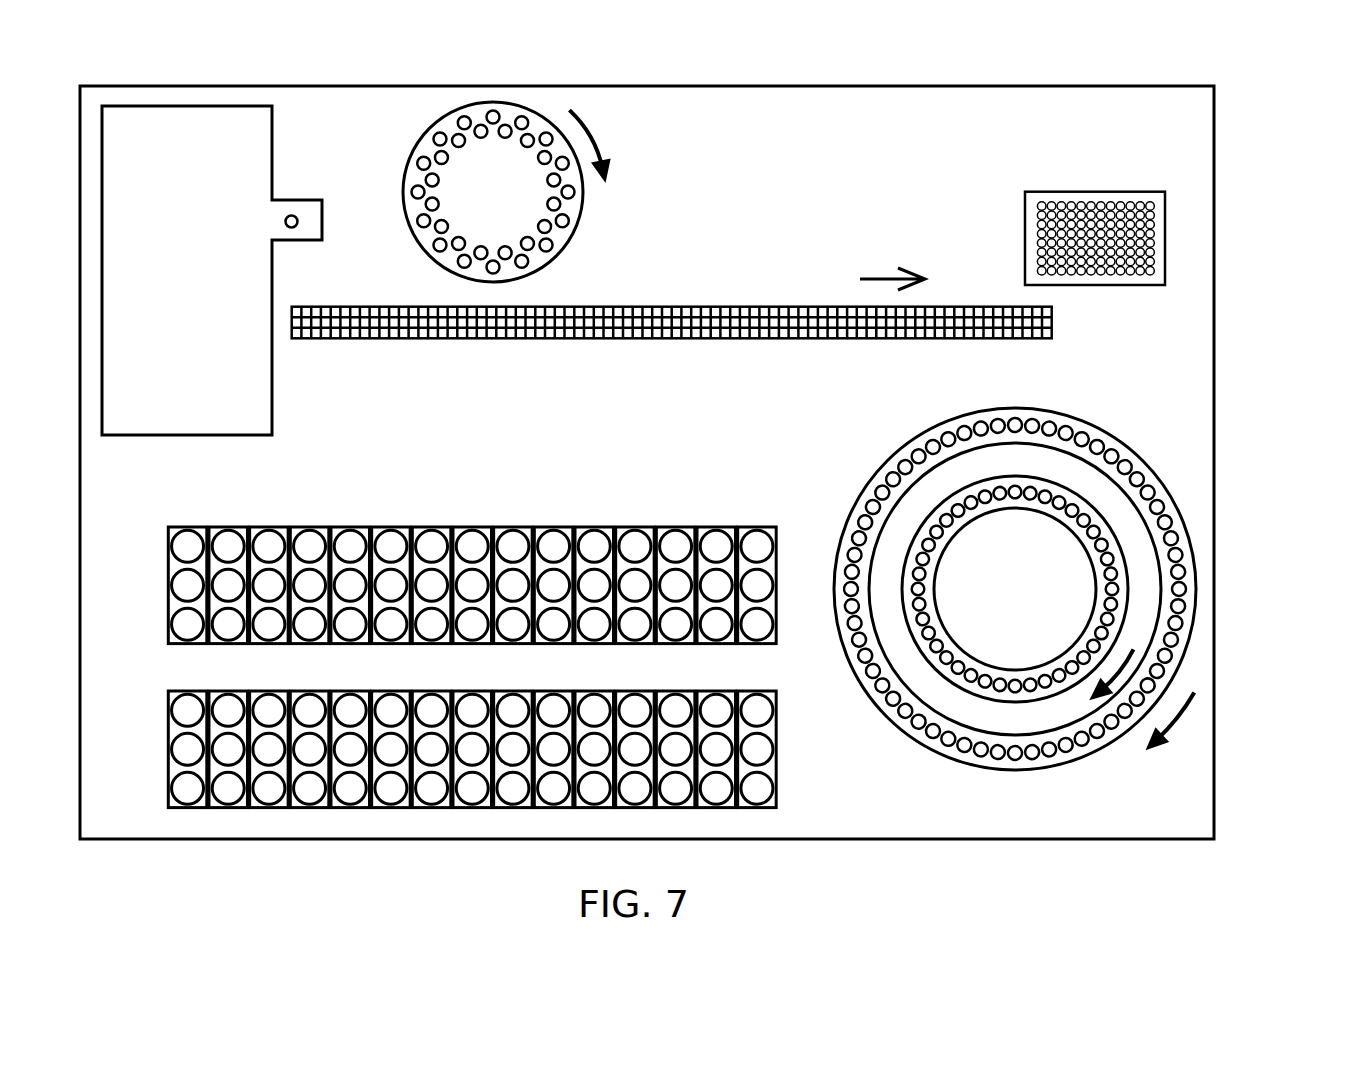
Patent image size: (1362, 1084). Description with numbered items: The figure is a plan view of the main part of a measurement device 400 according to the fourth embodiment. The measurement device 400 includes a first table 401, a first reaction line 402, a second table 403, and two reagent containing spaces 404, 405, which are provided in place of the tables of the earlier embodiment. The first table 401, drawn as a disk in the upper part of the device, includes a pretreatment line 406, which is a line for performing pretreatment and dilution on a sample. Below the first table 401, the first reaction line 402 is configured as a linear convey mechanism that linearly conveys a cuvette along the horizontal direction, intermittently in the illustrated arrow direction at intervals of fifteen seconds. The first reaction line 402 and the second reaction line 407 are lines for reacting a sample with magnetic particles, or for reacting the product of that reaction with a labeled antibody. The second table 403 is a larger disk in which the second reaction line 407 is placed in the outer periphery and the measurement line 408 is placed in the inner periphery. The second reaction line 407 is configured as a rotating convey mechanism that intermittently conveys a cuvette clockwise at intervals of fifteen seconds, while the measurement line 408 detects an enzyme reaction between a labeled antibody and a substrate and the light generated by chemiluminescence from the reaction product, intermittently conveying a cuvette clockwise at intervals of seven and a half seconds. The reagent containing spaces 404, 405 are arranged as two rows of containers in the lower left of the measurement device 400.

The measurement device 400 is at (1223, 343).
The first table 401 is at (583, 202).
The first reaction line 402 is at (732, 306).
The second table 403 is at (1118, 740).
The reagent containing space 404 is at (177, 605).
The reagent containing space 405 is at (177, 768).
The pretreatment line 406 is at (560, 235).
The second reaction line 407 is at (958, 748).
The measurement line 408 is at (1062, 685).